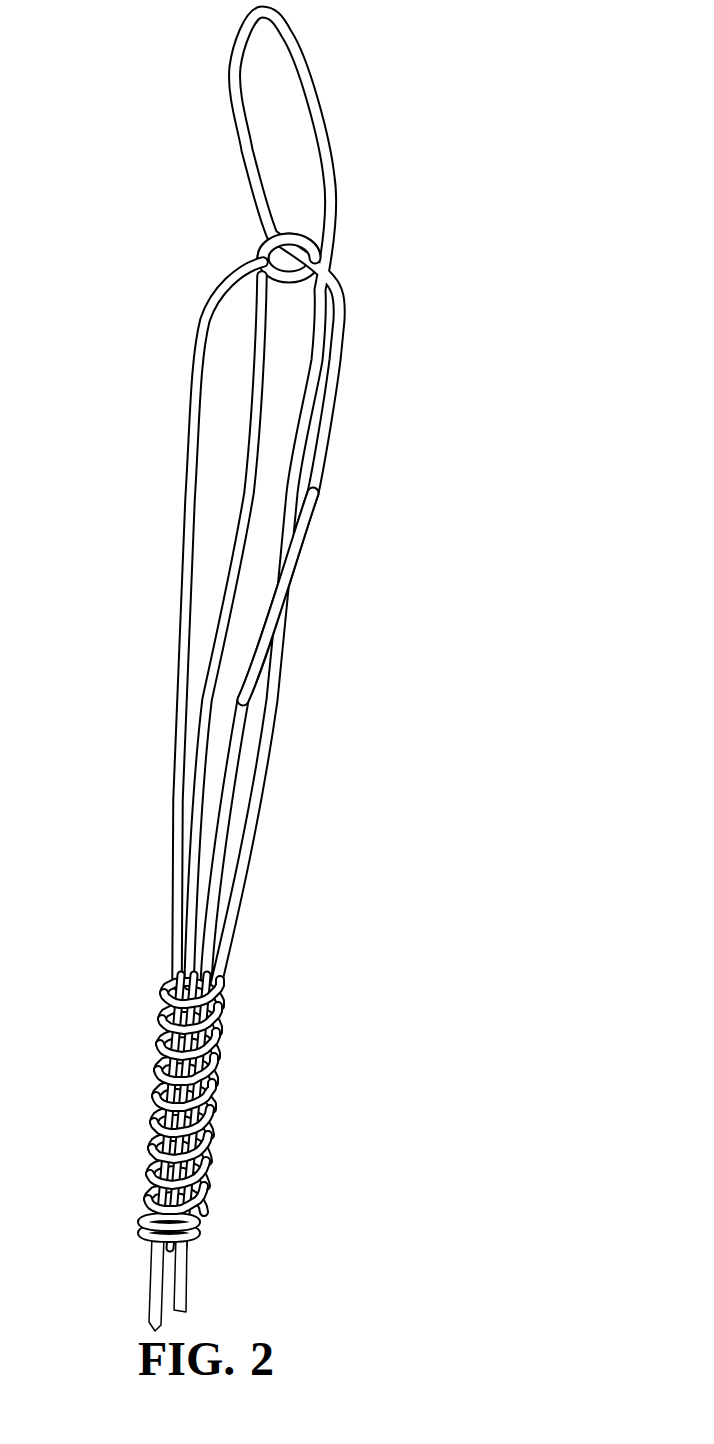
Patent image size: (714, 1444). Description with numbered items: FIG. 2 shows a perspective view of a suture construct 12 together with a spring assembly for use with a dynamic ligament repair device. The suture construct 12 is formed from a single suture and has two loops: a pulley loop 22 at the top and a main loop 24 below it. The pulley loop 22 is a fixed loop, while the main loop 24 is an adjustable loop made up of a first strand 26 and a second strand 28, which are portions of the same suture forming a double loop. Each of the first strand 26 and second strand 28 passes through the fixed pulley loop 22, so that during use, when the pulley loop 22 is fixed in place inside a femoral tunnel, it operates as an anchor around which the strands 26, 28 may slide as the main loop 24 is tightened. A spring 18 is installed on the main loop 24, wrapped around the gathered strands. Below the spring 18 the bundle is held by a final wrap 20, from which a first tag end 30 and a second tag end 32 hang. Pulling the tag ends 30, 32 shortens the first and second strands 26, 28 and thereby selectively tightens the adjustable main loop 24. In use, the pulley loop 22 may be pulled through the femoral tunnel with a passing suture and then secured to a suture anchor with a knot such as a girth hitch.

The suture construct 12 is at (505, 305).
The spring 18 is at (184, 1111).
The terminal ring wrap 20 is at (200, 1240).
The pulley loop 22 is at (327, 133).
The main loop 24 is at (148, 543).
The first strand 26 is at (203, 313).
The second strand 28 is at (262, 365).
The first tag end 30 is at (148, 1313).
The second tag end 32 is at (185, 1311).